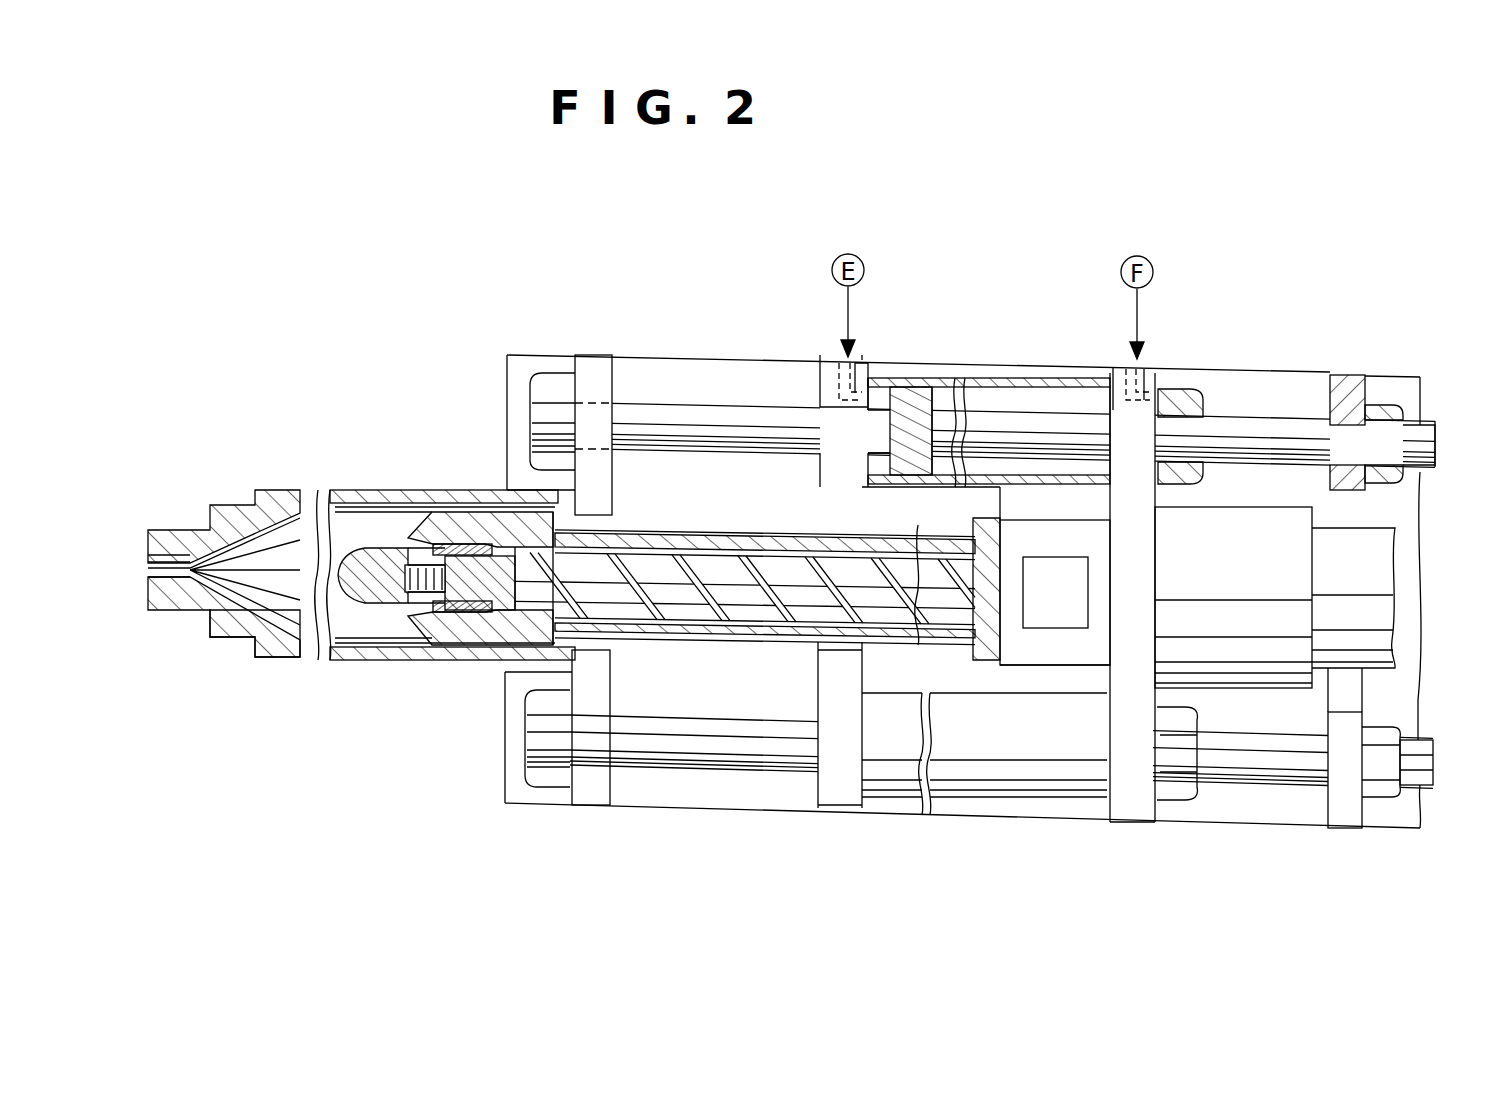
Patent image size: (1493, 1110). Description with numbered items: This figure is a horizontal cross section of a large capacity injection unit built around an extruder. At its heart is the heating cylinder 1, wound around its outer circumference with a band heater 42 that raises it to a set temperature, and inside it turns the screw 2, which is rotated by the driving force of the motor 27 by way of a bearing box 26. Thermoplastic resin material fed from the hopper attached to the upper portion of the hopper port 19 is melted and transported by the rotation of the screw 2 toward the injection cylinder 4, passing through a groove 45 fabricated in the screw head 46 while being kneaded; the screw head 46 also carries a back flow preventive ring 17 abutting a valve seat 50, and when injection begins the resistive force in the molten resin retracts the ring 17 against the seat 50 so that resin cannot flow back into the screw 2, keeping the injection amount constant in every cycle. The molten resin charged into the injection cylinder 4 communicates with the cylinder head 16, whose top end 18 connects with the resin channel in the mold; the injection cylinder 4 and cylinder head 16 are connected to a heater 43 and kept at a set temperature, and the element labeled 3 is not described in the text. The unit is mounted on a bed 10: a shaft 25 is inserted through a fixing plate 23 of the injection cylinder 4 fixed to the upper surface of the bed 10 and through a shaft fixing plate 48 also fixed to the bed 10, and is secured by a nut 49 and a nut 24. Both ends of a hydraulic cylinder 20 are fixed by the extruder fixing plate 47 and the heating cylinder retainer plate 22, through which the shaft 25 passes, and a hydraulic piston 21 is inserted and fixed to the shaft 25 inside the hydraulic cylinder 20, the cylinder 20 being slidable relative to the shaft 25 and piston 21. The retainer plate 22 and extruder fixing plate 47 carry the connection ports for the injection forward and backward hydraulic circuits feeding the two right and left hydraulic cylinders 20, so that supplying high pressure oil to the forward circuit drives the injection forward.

The heating cylinder 1 is at (670, 538).
The screw 2 is at (713, 575).
The screw head 3 is at (445, 522).
The injection cylinder 4 is at (350, 492).
The bed 10 is at (648, 372).
The cylinder head 16 is at (235, 640).
The back flow preventive ring 17 is at (402, 497).
The top end 18 is at (160, 525).
The hopper port 19 is at (1052, 605).
The hydraulic cylinder 20 is at (1048, 380).
The hydraulic piston 21 is at (912, 400).
The heating cylinder retainer plate 22 is at (862, 370).
The fixing plate 23 is at (593, 372).
The nut 24 is at (552, 385).
The shaft 25 is at (738, 425).
The bearing box 26 is at (1310, 668).
The motor 27 is at (1370, 610).
The band heater 42 is at (775, 533).
The heater 43 is at (190, 530).
The groove 45 is at (430, 605).
The screw head 46 is at (372, 585).
The extruder fixing plate 47 is at (1155, 380).
The shaft fixing plate 48 is at (1348, 395).
The nut 49 is at (1383, 405).
The valve seat 50 is at (472, 540).